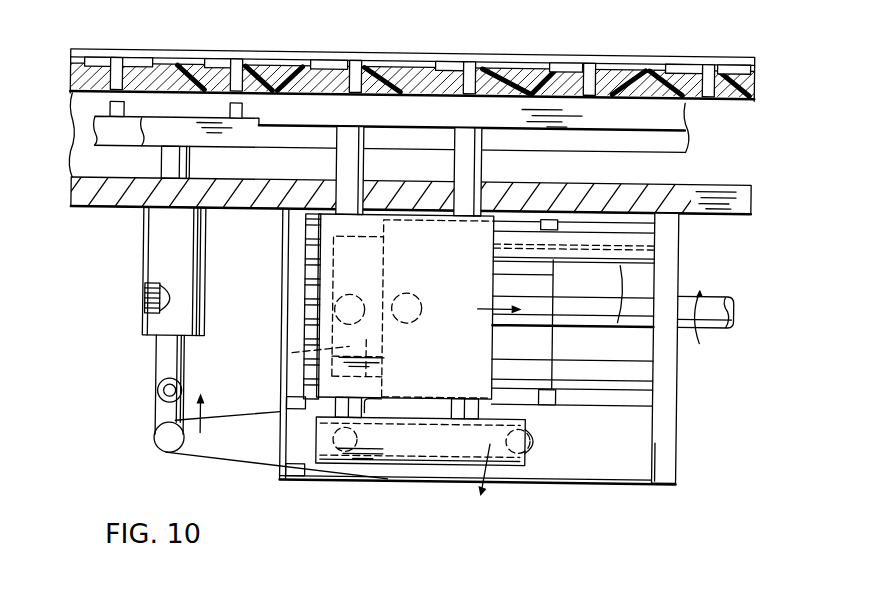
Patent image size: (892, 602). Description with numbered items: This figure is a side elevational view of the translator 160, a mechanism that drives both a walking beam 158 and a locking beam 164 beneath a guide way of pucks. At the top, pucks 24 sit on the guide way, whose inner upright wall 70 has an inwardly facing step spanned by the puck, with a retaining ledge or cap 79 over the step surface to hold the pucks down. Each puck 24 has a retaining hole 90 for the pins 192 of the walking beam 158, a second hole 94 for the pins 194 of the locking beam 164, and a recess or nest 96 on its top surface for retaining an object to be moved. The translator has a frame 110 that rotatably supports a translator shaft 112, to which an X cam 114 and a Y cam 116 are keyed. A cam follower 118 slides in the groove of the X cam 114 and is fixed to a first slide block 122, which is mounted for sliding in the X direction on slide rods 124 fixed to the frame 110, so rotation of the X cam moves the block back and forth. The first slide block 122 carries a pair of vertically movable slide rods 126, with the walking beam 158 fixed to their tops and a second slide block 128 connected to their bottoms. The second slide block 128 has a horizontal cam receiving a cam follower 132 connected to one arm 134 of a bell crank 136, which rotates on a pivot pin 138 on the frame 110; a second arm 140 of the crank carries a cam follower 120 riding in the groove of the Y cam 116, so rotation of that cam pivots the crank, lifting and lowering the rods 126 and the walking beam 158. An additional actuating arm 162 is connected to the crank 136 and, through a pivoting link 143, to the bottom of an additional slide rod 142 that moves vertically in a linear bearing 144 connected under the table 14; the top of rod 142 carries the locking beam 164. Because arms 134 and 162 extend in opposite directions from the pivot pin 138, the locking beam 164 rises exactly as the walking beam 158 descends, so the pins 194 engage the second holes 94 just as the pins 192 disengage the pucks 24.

The table 14 is at (713, 218).
The puck 24 is at (293, 53).
The inner upright wall 70 is at (738, 58).
The retaining ledge or cap 79 is at (670, 58).
The retaining hole 90 is at (465, 61).
The second hole 94 is at (114, 62).
The recess or nest 96 is at (590, 63).
The frame 110 is at (628, 483).
The translator shaft 112 is at (686, 333).
The X cam 114 is at (545, 411).
The Y cam 116 is at (320, 277).
The cam follower 118 is at (418, 304).
The cam follower 120 is at (372, 283).
The first slide block 122 is at (462, 357).
The slide rods 124 is at (610, 356).
The slide rods 126 is at (338, 190).
The second slide block 128 is at (449, 450).
The cam follower 132 is at (538, 440).
The arm 134 is at (495, 470).
The bell crank 136 is at (390, 467).
The pivot pin 138 is at (327, 474).
The second arm 140 is at (293, 354).
The additional slide rod 142 is at (185, 362).
The pivoting link 143 is at (157, 413).
The linear bearing 144 is at (147, 311).
The walking beam 158 is at (684, 125).
The translator 160 is at (680, 416).
The additional actuating arm 162 is at (257, 464).
The locking beam 164 is at (266, 212).
The pins 192 is at (354, 62).
The pins 194 is at (232, 110).